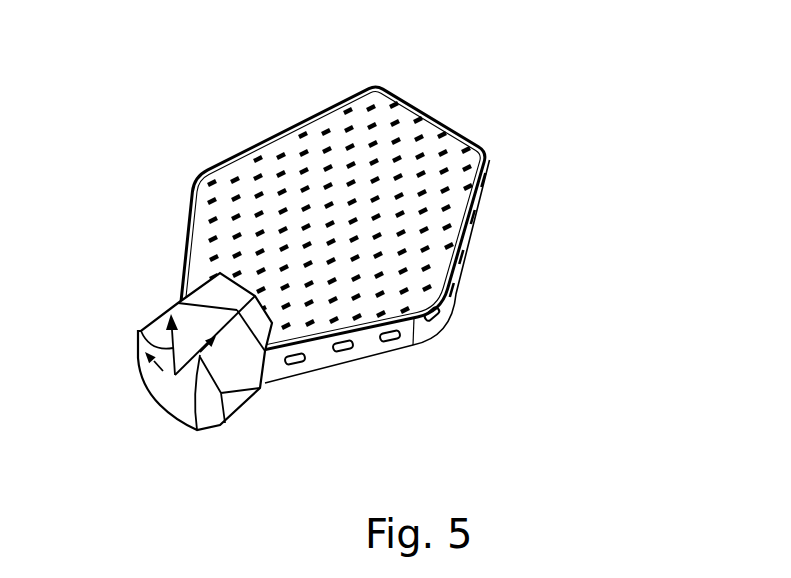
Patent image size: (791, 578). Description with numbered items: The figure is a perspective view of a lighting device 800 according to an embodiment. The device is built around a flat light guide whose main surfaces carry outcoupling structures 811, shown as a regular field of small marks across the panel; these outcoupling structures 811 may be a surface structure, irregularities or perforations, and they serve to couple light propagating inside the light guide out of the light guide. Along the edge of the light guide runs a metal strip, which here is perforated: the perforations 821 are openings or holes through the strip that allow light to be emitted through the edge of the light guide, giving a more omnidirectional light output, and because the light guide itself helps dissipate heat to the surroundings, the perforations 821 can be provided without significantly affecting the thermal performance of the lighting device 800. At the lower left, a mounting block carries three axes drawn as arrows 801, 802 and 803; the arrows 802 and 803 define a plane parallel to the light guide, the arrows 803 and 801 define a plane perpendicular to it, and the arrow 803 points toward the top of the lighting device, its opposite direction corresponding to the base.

The lighting device 800 is at (500, 89).
The outcoupling structures 811 is at (281, 151).
The perforations 821 is at (346, 352).
The axis/arrow 801 is at (141, 331).
The axis/arrow 802 is at (160, 372).
The axis/arrow 803 is at (197, 440).